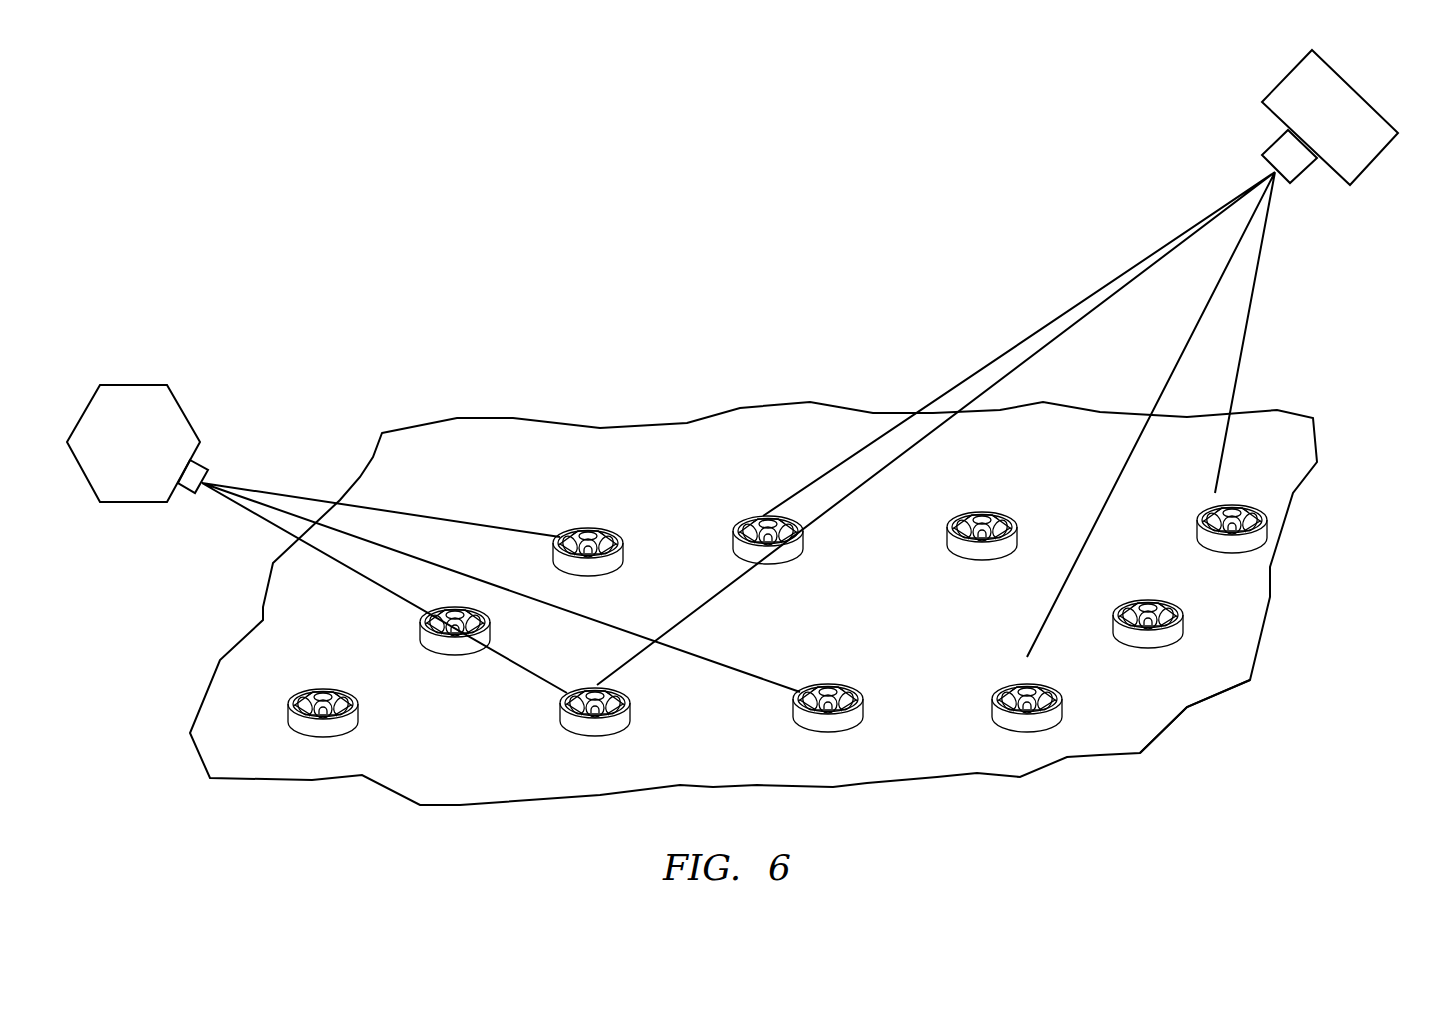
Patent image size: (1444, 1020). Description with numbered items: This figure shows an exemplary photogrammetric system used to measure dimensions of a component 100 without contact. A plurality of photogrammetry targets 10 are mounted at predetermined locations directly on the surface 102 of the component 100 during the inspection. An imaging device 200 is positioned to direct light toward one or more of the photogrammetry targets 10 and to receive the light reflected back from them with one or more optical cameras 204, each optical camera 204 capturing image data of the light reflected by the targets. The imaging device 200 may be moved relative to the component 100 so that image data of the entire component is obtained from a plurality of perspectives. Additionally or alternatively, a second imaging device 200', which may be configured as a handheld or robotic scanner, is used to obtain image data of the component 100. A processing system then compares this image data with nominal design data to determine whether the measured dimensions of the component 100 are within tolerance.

The photogrammetry target 10 is at (745, 508).
The component 100 is at (1113, 767).
The surface 102 is at (1188, 673).
The imaging device 200 is at (1309, 168).
The imaging device 200' is at (147, 394).
The optical camera 204 is at (1313, 88).